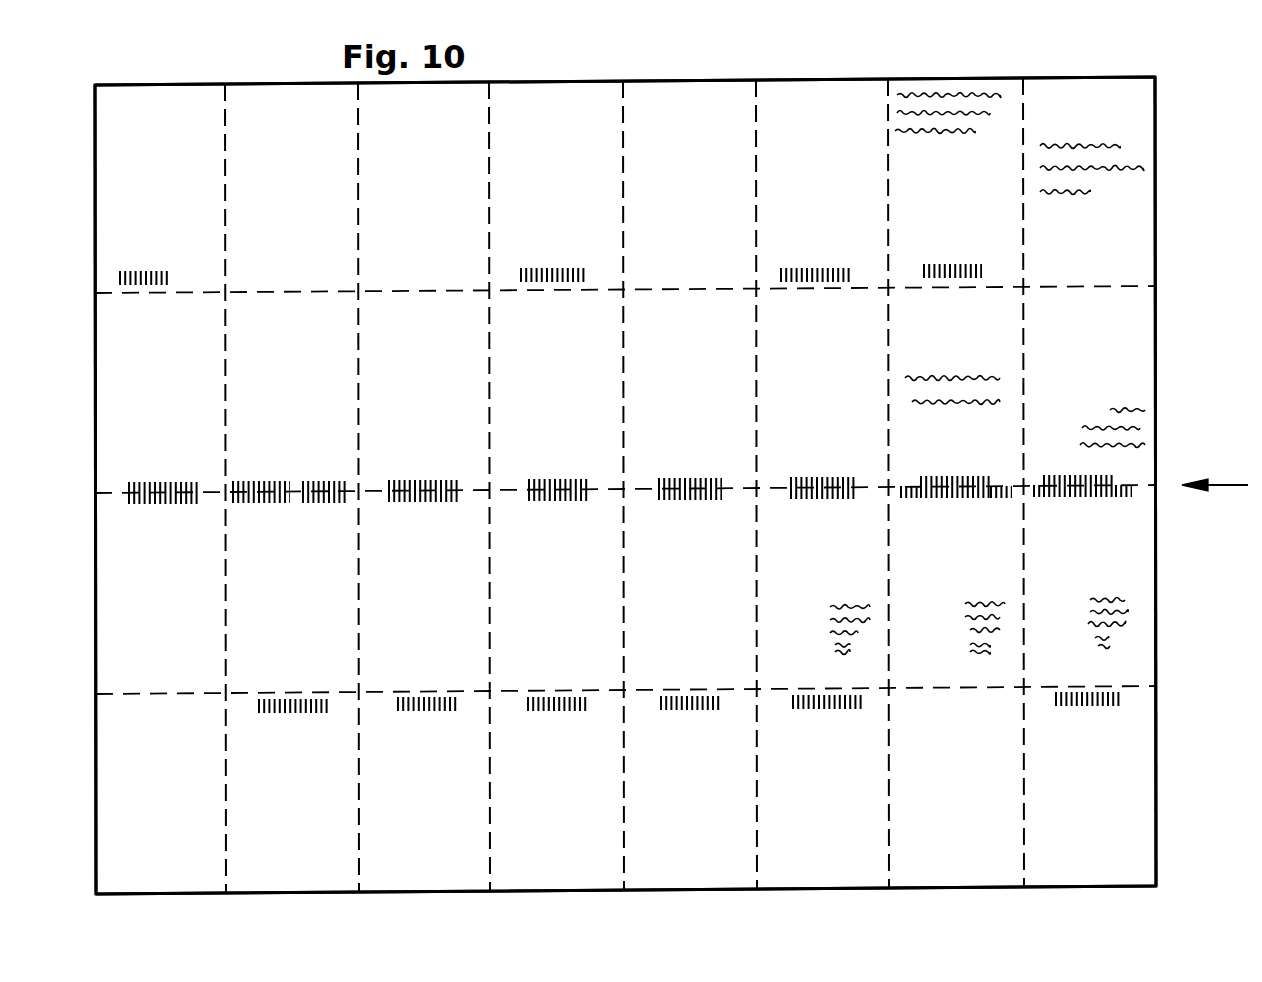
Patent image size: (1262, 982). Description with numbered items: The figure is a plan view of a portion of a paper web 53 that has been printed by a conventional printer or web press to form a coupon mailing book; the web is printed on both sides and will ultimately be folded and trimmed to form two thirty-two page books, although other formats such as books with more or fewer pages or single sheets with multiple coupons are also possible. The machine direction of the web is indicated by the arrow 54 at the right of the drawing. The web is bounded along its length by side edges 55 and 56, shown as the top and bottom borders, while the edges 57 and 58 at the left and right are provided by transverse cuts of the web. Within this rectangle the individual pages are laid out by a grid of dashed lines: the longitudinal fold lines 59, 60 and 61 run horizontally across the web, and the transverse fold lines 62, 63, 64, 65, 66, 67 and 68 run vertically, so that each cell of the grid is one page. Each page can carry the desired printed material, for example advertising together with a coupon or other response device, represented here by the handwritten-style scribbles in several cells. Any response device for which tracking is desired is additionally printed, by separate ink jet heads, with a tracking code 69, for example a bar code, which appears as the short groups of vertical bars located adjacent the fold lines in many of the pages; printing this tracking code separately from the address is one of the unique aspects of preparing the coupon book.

The paper web 53 is at (1157, 252).
The arrow 54 is at (1228, 485).
The side edge 55 is at (673, 82).
The side edge 56 is at (689, 893).
The edge 57 is at (96, 650).
The edge 58 is at (1157, 628).
The longitudinal fold line 59 is at (393, 292).
The longitudinal fold line 60 is at (374, 491).
The longitudinal fold line 61 is at (378, 692).
The transverse fold line 62 is at (225, 162).
The transverse fold line 63 is at (358, 170).
The transverse fold line 64 is at (489, 150).
The transverse fold line 65 is at (623, 154).
The transverse fold line 66 is at (756, 134).
The transverse fold line 67 is at (888, 154).
The transverse fold line 68 is at (1023, 165).
The tracking code 69 is at (153, 483).